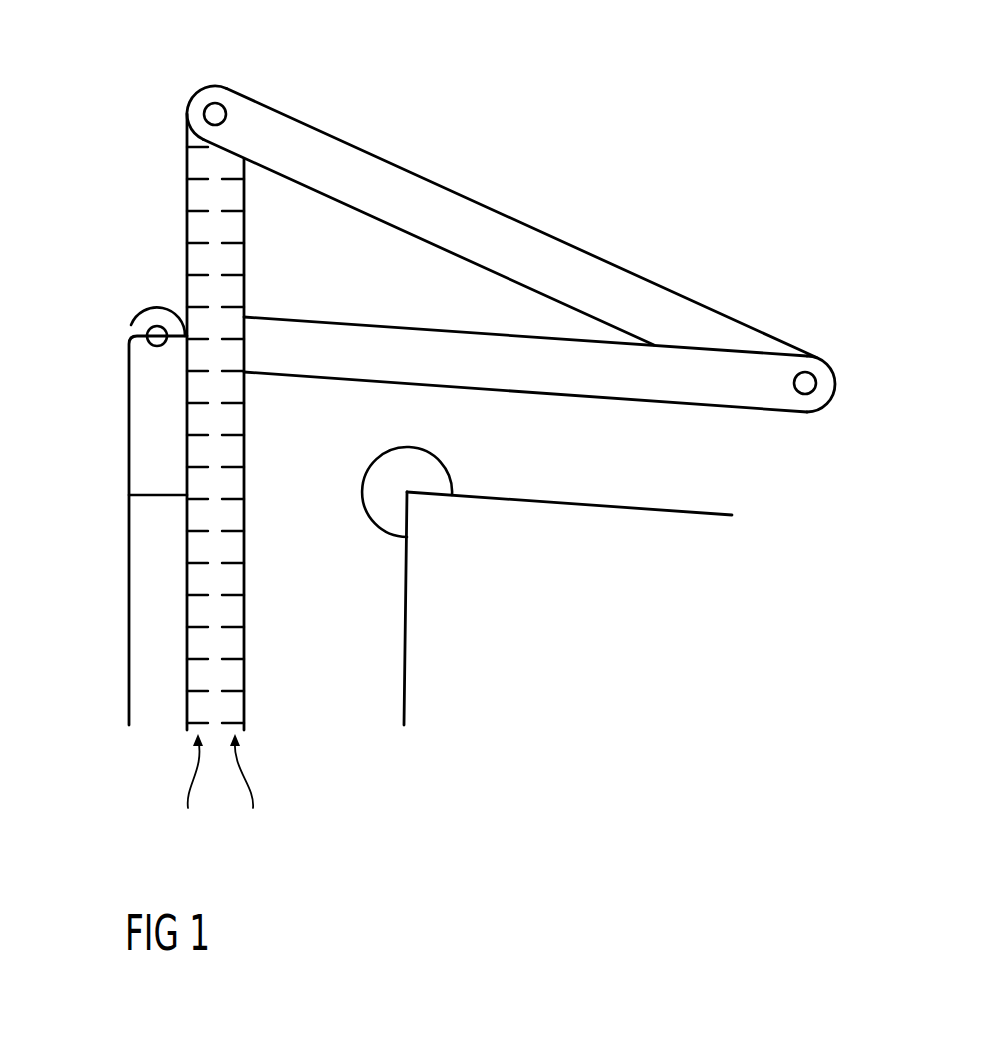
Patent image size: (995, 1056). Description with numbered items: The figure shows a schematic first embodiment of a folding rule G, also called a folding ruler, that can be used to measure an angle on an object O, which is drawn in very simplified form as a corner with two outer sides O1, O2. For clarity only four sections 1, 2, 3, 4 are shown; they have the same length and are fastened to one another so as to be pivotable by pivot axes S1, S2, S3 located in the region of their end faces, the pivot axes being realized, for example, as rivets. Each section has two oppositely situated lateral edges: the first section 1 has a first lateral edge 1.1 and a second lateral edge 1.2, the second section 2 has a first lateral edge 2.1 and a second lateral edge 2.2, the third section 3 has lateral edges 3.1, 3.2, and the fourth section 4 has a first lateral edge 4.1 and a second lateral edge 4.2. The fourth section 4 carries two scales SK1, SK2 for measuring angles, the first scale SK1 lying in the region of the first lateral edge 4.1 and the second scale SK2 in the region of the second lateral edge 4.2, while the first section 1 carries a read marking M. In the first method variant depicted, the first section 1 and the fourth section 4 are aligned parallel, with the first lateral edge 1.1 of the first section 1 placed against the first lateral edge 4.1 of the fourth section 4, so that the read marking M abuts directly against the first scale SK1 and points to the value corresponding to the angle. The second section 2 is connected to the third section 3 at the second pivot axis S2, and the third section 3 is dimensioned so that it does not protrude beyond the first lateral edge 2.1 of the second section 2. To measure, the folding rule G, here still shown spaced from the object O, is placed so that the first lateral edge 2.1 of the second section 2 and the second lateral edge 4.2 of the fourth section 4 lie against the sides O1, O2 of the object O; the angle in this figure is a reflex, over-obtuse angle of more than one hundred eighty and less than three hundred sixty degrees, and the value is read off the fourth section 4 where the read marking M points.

The first section 1 is at (102, 495).
The first lateral edge of the first section 1.1 is at (186, 540).
The second lateral edge of the first section 1.2 is at (128, 536).
The second section 2 is at (539, 362).
The first lateral edge of the second section 2.1 is at (633, 403).
The second lateral edge of the second section 2.2 is at (282, 317).
The third section 3 is at (502, 192).
The first lateral edge of the third section 3.1 is at (352, 147).
The second lateral edge of the third section 3.2 is at (428, 247).
The fourth section 4 is at (214, 425).
The first lateral edge of the fourth section 4.1 is at (188, 572).
The second lateral edge of the fourth section 4.2 is at (245, 647).
The first pivot axis S1 is at (150, 329).
The second pivot axis S2 is at (808, 374).
The third pivot axis S3 is at (207, 107).
The read marking M is at (128, 493).
The folding rule G is at (715, 136).
The object O is at (579, 634).
The first side of the angle O1 is at (732, 515).
The second side of the angle O2 is at (404, 725).
The first scale SK1 is at (189, 791).
The second scale SK2 is at (247, 791).